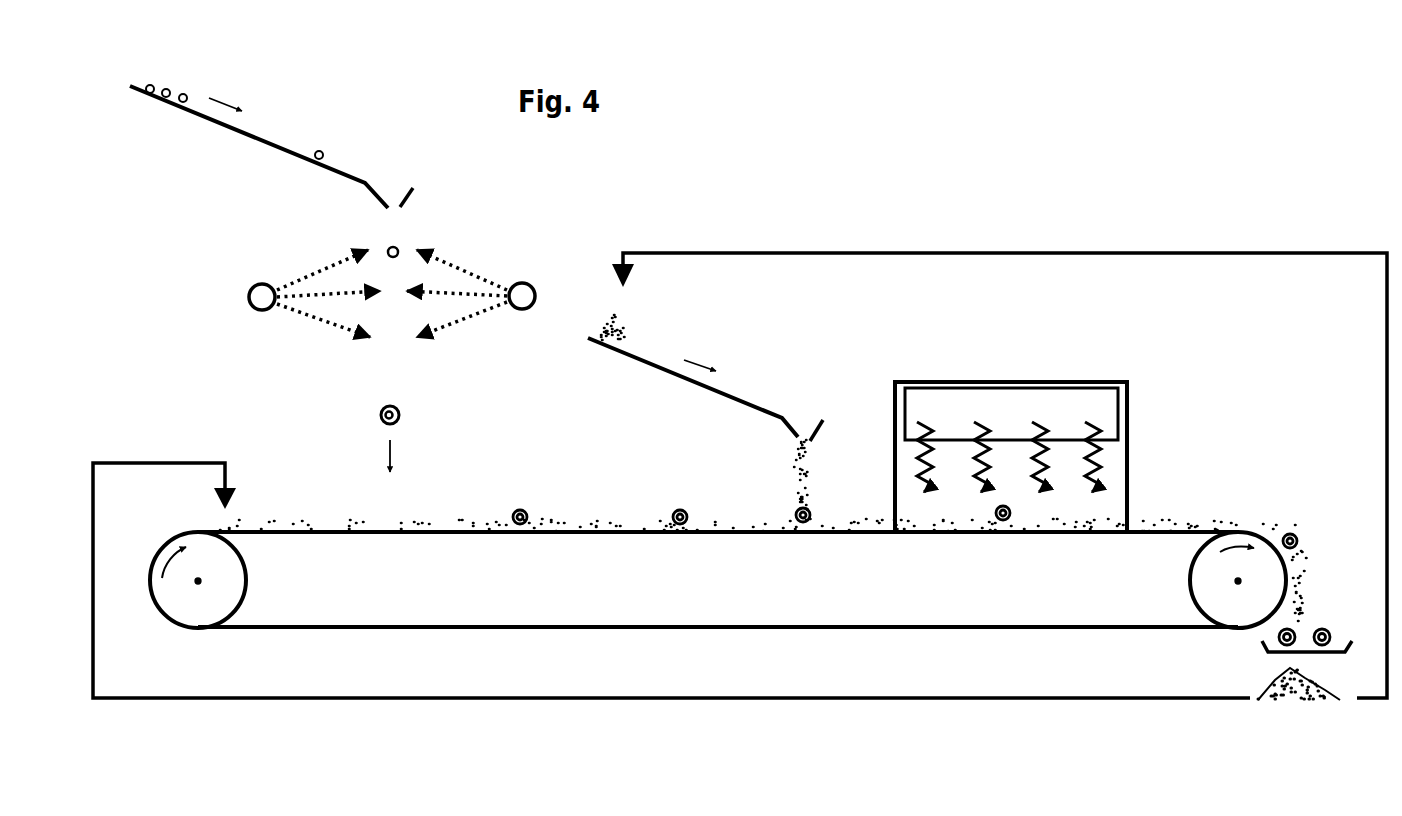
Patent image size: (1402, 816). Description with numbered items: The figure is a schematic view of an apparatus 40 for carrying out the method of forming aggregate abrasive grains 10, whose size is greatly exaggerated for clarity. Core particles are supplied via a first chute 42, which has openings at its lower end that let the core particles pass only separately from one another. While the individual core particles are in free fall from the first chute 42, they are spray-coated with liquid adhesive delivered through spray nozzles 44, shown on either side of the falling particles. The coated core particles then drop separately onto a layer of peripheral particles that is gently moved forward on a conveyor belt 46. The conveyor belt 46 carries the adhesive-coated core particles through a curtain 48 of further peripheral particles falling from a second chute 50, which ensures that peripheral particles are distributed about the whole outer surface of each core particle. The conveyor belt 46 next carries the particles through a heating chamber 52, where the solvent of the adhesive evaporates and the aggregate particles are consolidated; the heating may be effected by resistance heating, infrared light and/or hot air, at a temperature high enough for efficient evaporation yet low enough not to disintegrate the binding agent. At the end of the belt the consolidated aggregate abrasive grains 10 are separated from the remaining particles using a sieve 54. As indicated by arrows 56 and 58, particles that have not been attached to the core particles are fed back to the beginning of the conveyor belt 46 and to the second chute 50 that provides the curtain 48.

The aggregate abrasive grains 10 is at (1334, 616).
The apparatus 40 is at (704, 186).
The first chute 42 is at (270, 145).
The spray nozzles 44 is at (524, 282).
The conveyor belt 46 is at (548, 623).
The curtain 48 is at (826, 483).
The second chute 50 is at (683, 383).
The heating chamber 52 is at (1130, 465).
The sieve 54 is at (1258, 645).
The arrow 56 is at (838, 696).
The arrow 58 is at (950, 257).